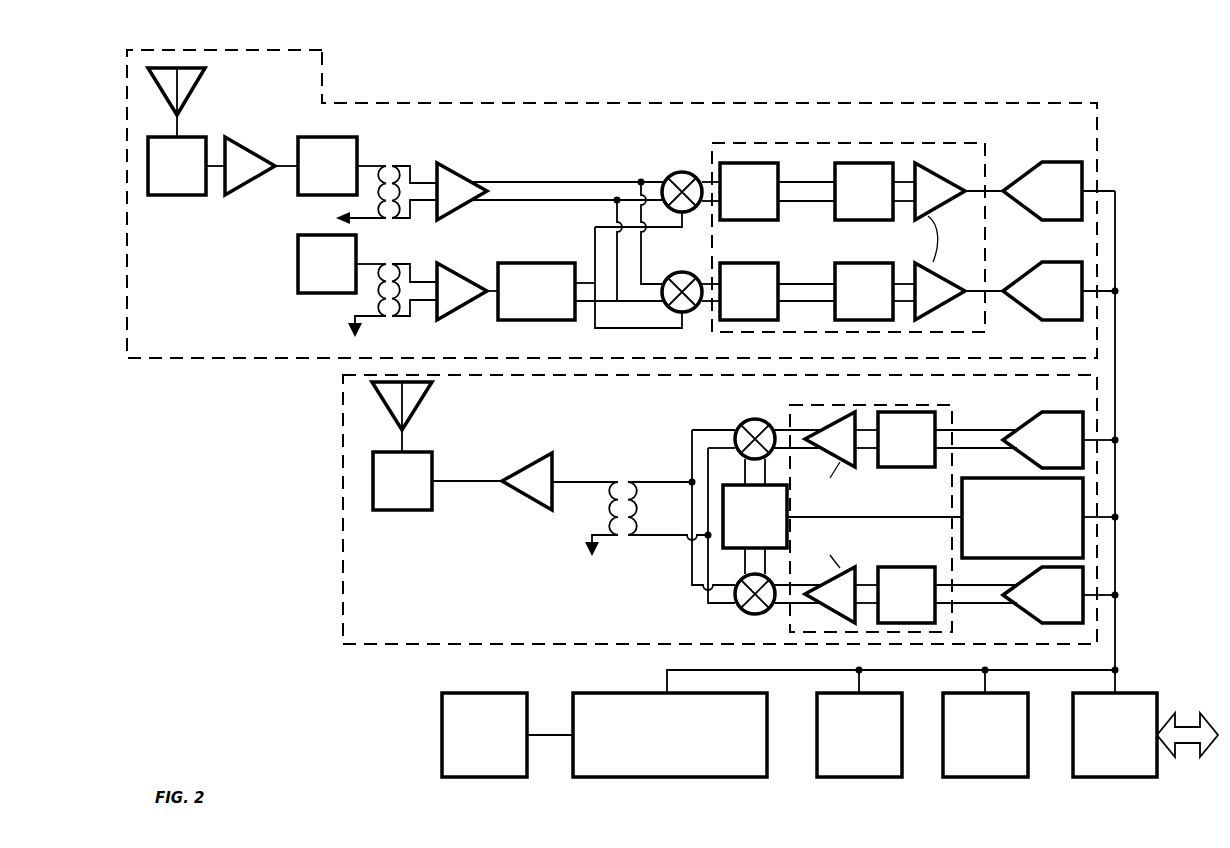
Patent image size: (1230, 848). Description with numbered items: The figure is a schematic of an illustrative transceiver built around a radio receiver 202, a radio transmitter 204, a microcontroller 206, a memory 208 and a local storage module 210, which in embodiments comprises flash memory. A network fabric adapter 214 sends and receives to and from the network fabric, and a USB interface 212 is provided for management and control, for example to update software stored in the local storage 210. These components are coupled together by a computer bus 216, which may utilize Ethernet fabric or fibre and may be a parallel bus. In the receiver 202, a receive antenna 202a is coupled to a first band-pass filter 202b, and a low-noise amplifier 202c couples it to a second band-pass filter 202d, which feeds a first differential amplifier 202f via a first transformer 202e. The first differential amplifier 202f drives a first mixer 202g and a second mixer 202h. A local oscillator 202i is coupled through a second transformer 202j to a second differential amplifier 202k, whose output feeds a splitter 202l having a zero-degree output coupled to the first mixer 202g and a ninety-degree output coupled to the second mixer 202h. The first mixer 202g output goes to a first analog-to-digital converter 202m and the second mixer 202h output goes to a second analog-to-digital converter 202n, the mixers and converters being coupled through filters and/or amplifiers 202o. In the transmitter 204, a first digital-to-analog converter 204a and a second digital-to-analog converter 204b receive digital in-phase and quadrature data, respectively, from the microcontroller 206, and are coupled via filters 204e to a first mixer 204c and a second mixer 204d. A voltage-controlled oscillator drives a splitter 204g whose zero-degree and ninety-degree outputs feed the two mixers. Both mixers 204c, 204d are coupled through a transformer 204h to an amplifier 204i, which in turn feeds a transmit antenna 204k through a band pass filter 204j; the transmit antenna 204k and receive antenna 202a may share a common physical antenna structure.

The radio receiver 202 is at (322, 72).
The receive antenna 202a is at (197, 95).
The first band-pass filter 202b is at (178, 196).
The low-noise amplifier 202c is at (251, 184).
The second band-pass filter 202d is at (328, 137).
The first transformer 202e is at (387, 165).
The first differential amplifier 202f is at (450, 170).
The first mixer 202g is at (682, 172).
The second mixer 202h is at (682, 272).
The local oscillator 202i is at (328, 294).
The second transformer 202j is at (387, 263).
The second differential amplifier 202k is at (450, 272).
The splitter 202l is at (527, 263).
The first analog-to-digital converter 202m is at (1060, 162).
The second analog-to-digital converter 202n is at (1060, 262).
The filters and/or amplifiers 202o is at (867, 143).
The radio transmitter 204 is at (343, 493).
The first digital-to-analog converter 204a is at (1058, 412).
The second digital-to-analog converter 204b is at (1043, 595).
The first mixer 204c is at (750, 418).
The second mixer 204d is at (742, 610).
The filters 204e is at (862, 405).
The splitter 204g is at (731, 548).
The transformer 204h is at (622, 482).
The amplifier 204i is at (527, 510).
The band pass filter 204j is at (395, 512).
The transmit antenna 204k is at (417, 410).
The microcontroller 206 is at (670, 735).
The memory 208 is at (859, 735).
The local storage module 210 is at (985, 735).
The USB interface 212 is at (484, 735).
The network fabric adapter 214 is at (1145, 735).
The computer bus 216 is at (1116, 422).